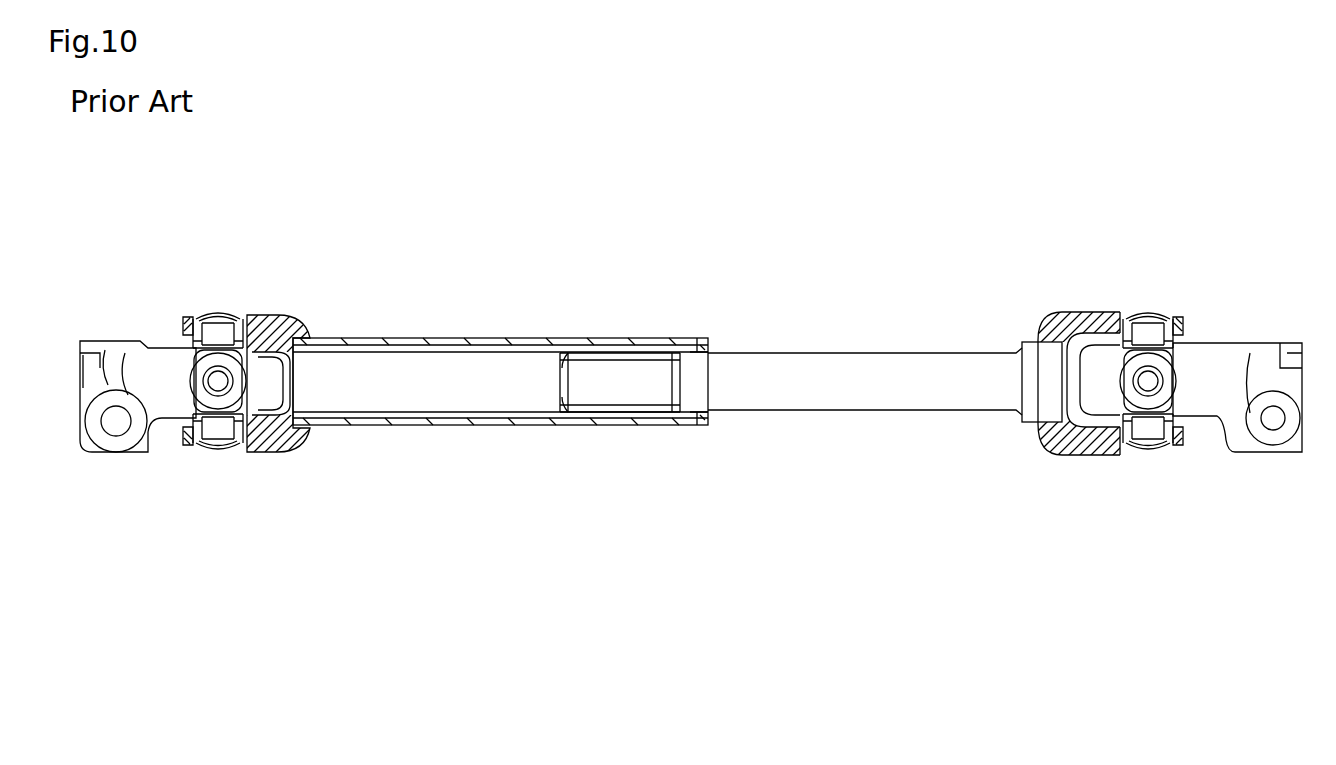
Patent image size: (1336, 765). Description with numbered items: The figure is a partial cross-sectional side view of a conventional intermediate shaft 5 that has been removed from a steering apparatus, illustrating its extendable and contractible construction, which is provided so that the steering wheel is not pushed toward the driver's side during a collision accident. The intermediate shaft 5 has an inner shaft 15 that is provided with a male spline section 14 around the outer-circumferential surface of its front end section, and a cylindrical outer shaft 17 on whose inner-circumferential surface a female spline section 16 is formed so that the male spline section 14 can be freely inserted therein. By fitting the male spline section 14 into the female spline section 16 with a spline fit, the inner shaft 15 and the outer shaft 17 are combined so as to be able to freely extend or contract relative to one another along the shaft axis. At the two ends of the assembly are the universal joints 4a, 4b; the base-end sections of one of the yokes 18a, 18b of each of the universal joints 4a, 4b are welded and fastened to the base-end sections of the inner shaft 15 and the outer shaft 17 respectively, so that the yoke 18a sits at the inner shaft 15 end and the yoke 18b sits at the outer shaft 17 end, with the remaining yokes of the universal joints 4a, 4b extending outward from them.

The intermediate shaft 5 is at (710, 331).
The universal joint 4a is at (1222, 364).
The universal joint 4b is at (156, 354).
The male spline section 14 is at (627, 397).
The inner shaft 15 is at (890, 400).
The female spline section 16 is at (622, 356).
The outer shaft 17 is at (443, 423).
The yoke 18a is at (1091, 312).
The yoke 18b is at (280, 452).